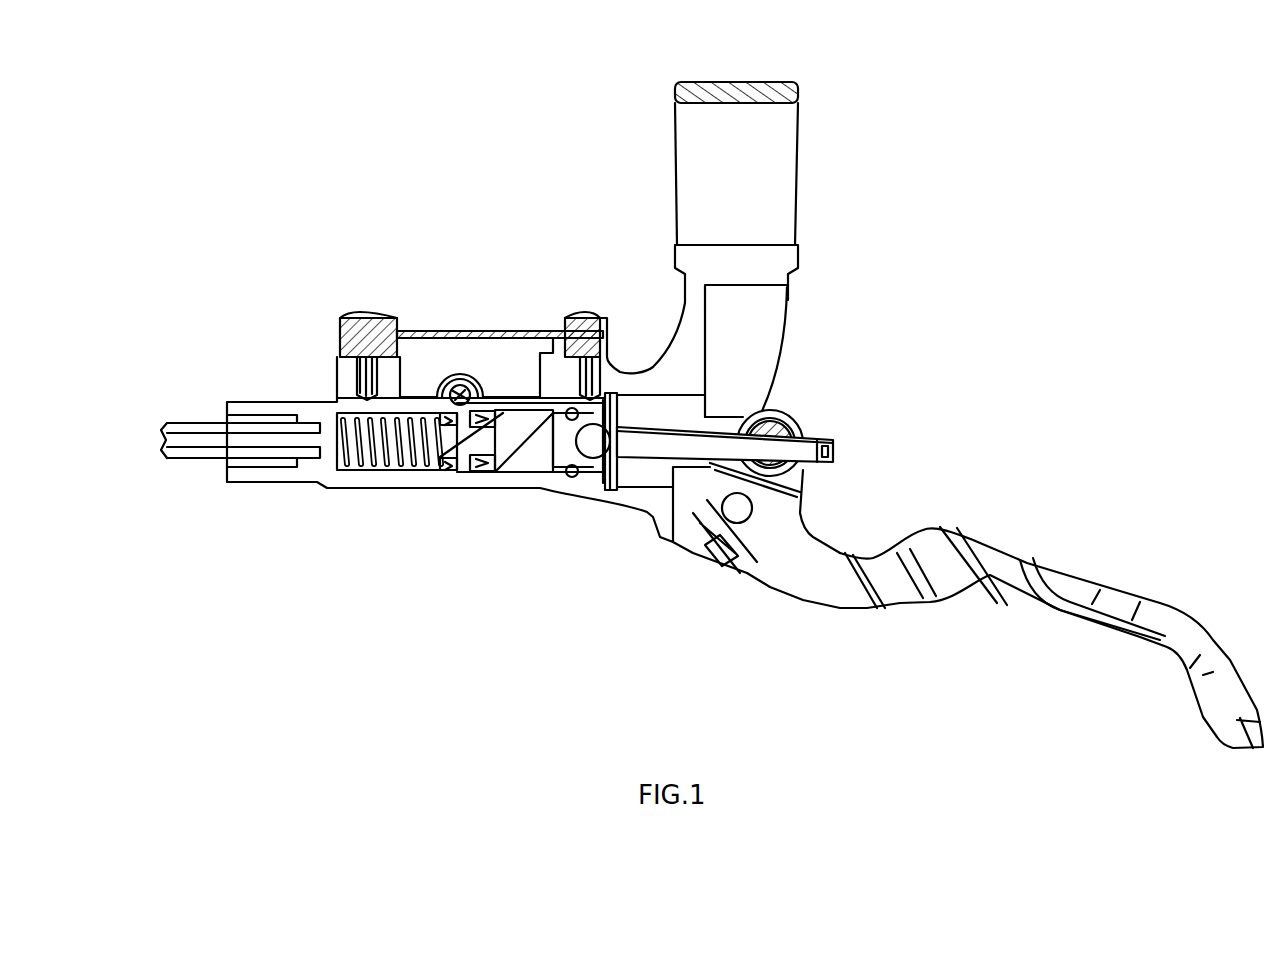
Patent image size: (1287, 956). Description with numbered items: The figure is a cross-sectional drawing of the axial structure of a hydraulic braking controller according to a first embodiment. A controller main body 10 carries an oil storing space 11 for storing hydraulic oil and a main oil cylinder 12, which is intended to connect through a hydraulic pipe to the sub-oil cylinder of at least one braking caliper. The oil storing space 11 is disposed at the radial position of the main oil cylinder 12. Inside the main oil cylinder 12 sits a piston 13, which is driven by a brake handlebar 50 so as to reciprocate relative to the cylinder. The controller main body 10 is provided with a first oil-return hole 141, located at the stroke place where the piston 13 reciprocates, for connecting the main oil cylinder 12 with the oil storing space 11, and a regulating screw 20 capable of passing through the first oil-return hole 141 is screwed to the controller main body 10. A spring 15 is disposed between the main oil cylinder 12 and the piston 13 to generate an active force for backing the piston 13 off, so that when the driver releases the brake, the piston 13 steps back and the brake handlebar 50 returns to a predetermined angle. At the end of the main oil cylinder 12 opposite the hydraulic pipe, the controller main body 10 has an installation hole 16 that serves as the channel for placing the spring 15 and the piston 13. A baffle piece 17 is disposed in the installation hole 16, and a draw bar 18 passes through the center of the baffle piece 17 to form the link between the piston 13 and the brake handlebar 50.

The controller main body 10 is at (363, 480).
The oil storing space 11 is at (519, 395).
The main oil cylinder 12 is at (418, 470).
The piston 13 is at (537, 453).
The first oil-return hole 141 is at (455, 403).
The spring 15 is at (350, 413).
The installation hole 16 is at (632, 402).
The baffle piece 17 is at (612, 416).
The draw bar 18 is at (782, 452).
The regulating screw 20 is at (458, 391).
The brake handlebar 50 is at (843, 592).